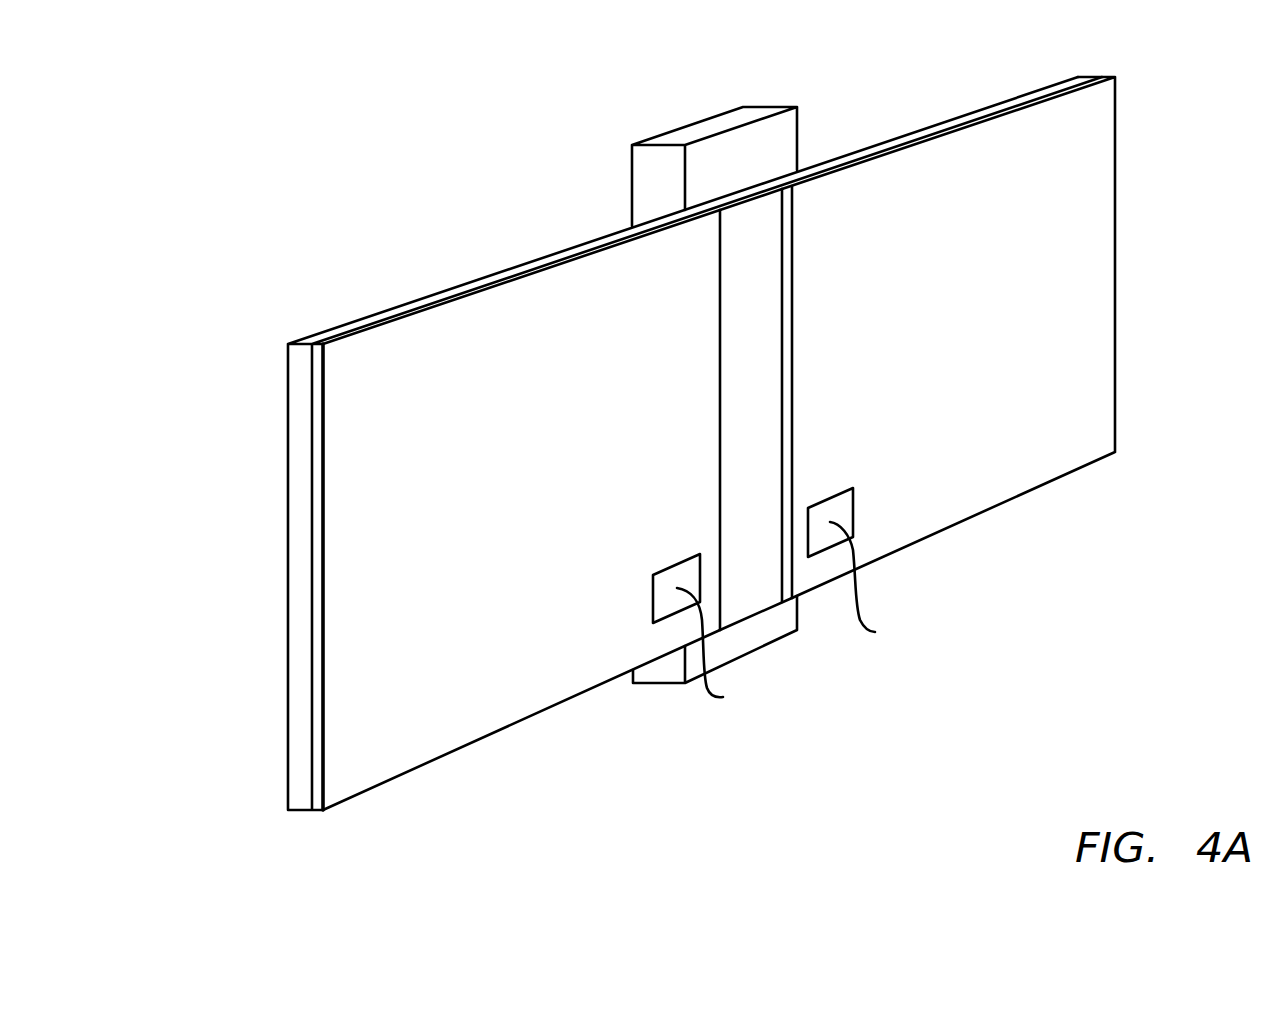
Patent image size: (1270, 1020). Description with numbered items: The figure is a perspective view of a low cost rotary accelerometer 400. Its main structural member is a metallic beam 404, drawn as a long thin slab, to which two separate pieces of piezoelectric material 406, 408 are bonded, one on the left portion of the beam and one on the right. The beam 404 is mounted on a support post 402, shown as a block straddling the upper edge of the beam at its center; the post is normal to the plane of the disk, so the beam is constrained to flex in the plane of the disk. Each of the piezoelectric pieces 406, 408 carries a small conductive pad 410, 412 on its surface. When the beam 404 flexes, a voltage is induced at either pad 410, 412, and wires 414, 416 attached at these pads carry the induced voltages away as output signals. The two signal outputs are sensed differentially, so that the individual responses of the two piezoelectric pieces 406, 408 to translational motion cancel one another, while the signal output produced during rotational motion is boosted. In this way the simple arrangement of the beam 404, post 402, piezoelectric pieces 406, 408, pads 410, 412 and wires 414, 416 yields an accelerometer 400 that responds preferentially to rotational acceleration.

The accelerometer 400 is at (729, 461).
The support post 402 is at (708, 118).
The metallic beam 404 is at (297, 414).
The piezoelectric material 406 is at (400, 745).
The piezoelectric material 408 is at (1102, 227).
The conductive pad 410 is at (653, 605).
The conductive pad 412 is at (853, 510).
The wire 414 is at (707, 692).
The wire 416 is at (862, 607).